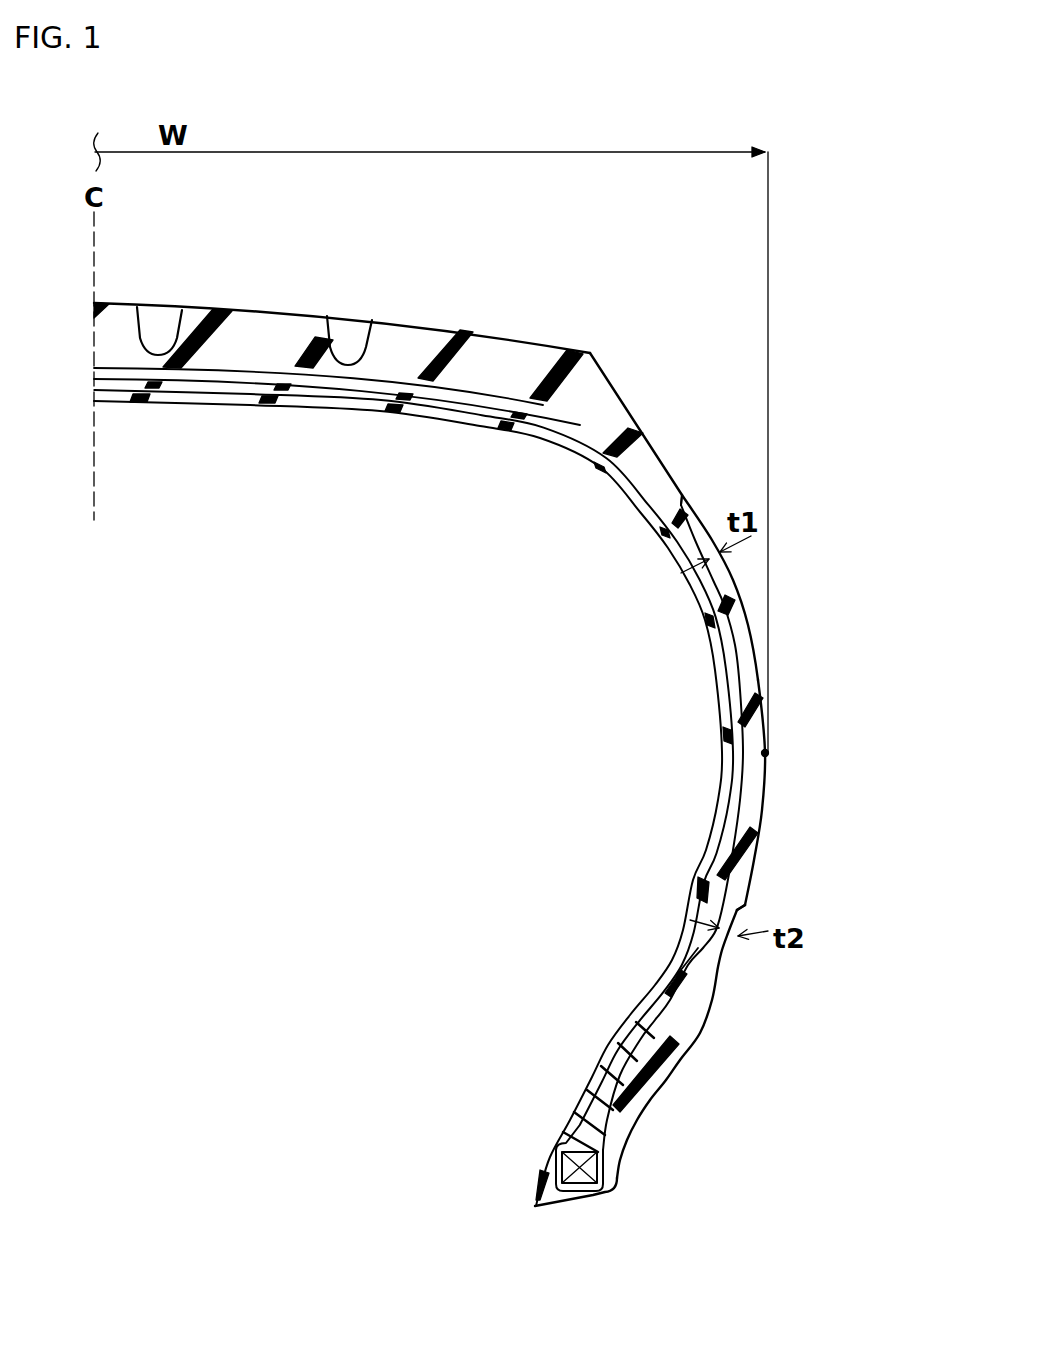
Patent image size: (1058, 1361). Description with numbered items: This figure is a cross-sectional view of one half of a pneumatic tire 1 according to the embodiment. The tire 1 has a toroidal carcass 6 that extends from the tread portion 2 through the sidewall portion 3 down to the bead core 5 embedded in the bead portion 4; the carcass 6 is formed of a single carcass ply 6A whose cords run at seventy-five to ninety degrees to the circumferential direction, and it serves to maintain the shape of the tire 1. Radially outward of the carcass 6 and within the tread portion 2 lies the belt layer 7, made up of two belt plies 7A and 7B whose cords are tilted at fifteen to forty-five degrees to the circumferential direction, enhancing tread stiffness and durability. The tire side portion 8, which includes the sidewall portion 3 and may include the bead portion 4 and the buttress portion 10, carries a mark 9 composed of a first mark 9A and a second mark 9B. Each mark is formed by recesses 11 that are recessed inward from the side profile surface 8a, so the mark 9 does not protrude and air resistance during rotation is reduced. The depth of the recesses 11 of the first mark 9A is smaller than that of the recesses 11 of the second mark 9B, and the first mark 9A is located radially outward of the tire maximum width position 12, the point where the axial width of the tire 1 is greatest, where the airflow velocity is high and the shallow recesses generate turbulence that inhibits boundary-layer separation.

The tire 1 is at (516, 282).
The tread portion 2 is at (361, 291).
The sidewall portion 3 is at (713, 478).
The bead portion 4 is at (633, 1153).
The bead core 5 is at (580, 1158).
The carcass 6 is at (719, 819).
The carcass ply 6A is at (733, 683).
The belt layer 7 is at (337, 473).
The belt ply 7A is at (313, 380).
The belt ply 7B is at (377, 382).
The tire side portion 8 is at (723, 757).
The side profile surface 8a is at (753, 632).
The mark 9 is at (809, 706).
The first mark 9A is at (733, 580).
The second mark 9B is at (820, 799).
The buttress portion 10 is at (651, 389).
The recess 11 is at (698, 518).
The tire maximum width position 12 is at (765, 753).